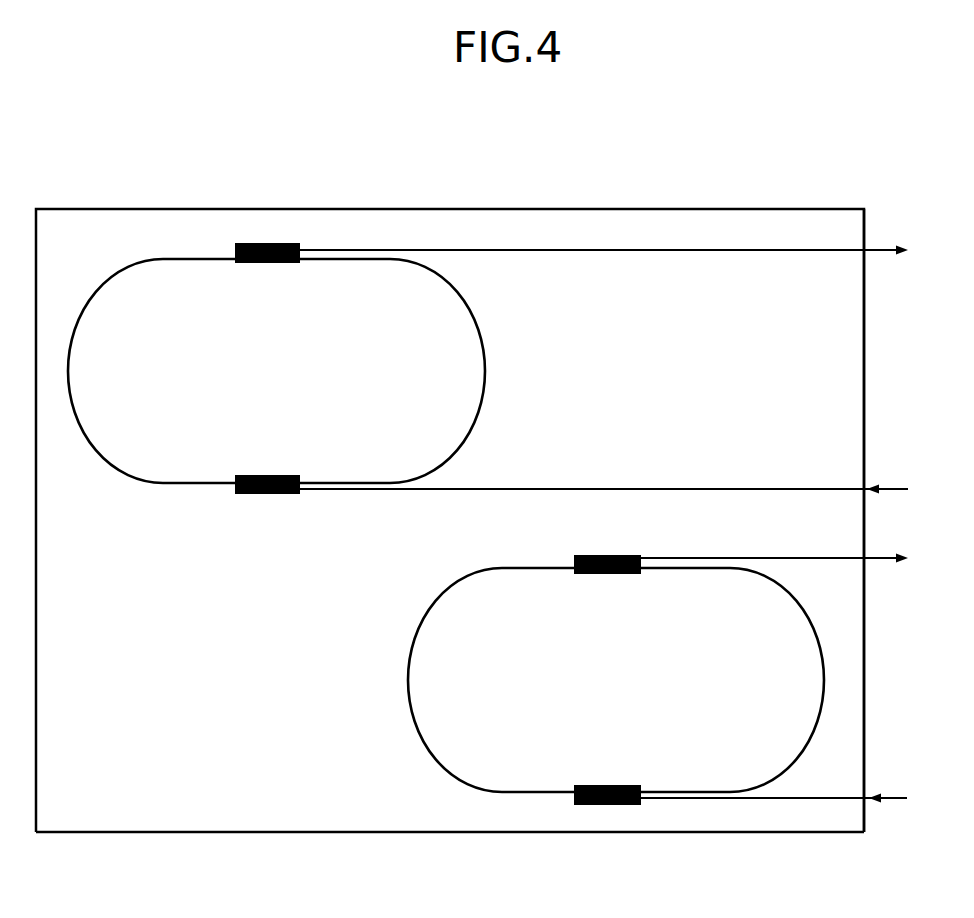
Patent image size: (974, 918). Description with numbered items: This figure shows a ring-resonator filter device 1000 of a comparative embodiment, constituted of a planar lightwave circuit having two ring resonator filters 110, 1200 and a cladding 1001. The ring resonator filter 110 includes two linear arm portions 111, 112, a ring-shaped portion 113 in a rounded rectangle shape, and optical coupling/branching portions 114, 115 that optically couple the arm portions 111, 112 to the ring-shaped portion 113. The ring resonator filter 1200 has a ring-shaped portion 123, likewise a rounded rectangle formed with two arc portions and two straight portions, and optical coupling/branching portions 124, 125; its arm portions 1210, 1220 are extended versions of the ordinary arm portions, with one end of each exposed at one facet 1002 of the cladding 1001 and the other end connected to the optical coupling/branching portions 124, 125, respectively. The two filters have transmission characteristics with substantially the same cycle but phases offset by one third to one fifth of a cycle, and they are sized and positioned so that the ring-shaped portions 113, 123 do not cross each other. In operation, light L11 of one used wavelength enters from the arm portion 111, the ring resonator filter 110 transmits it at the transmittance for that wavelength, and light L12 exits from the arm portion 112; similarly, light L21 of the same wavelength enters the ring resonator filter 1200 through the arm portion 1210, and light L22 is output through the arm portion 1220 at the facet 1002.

The ring-resonator filter device 1000 is at (495, 514).
The cladding 1001 is at (846, 833).
The facet 1002 is at (866, 820).
The ring resonator filter 1200 is at (480, 325).
The arm portion 1220 is at (700, 249).
The arm portion 1210 is at (730, 488).
The ring-shaped portion 123 is at (98, 292).
The optical coupling/branching portion 124 is at (270, 475).
The optical coupling/branching portion 125 is at (270, 243).
The ring resonator filter 110 is at (620, 700).
The arm portion 111 is at (772, 800).
The arm portion 112 is at (797, 557).
The ring-shaped portion 113 is at (407, 680).
The optical coupling/branching portion 114 is at (608, 785).
The optical coupling/branching portion 115 is at (607, 574).
The light L22 is at (880, 248).
The light L21 is at (893, 488).
The light L12 is at (880, 560).
The light L11 is at (895, 796).